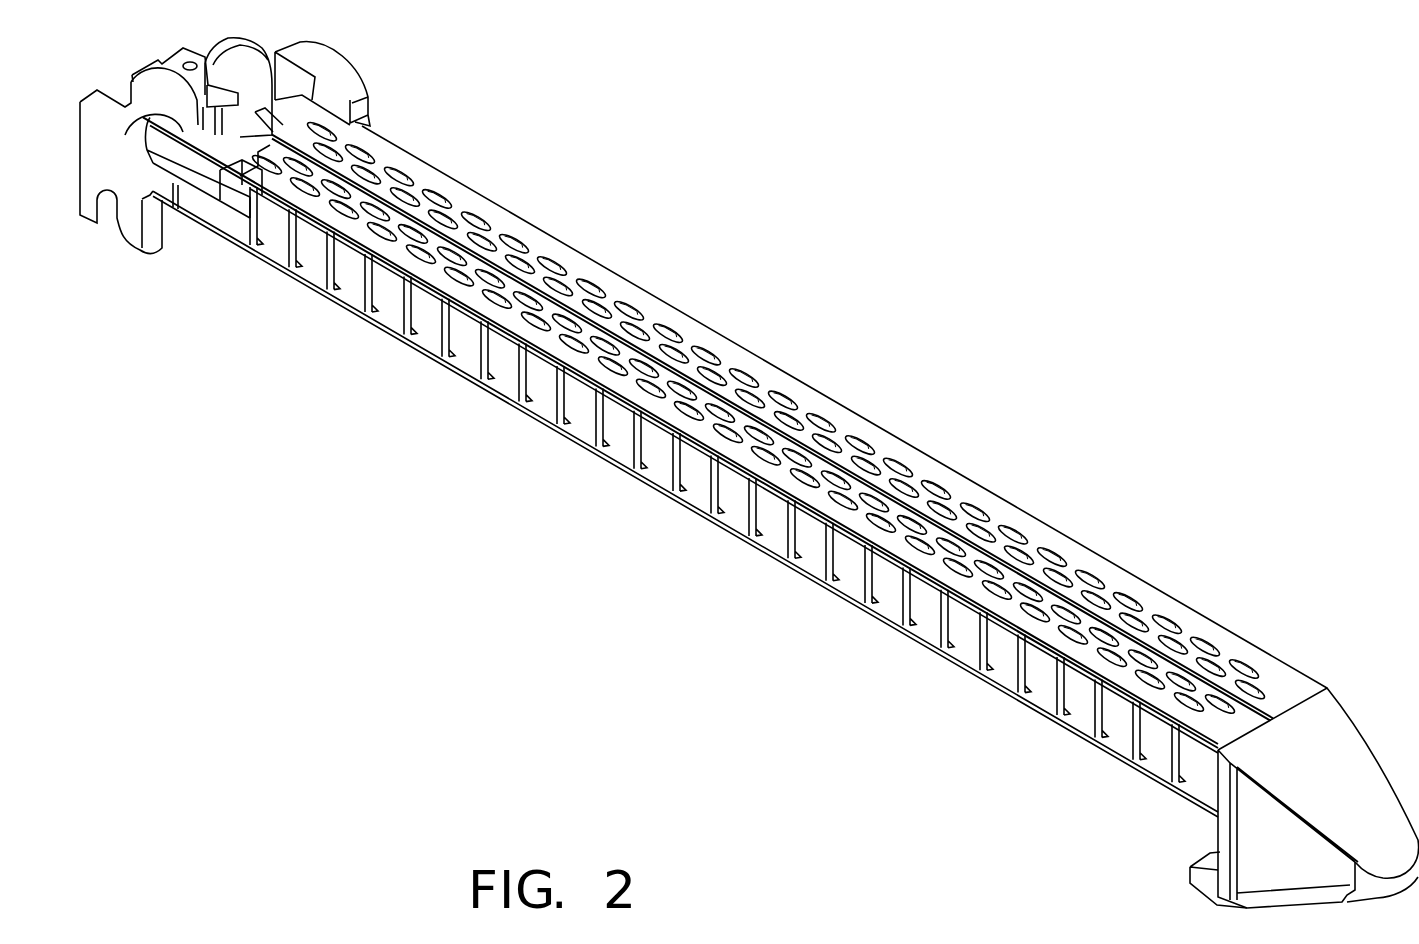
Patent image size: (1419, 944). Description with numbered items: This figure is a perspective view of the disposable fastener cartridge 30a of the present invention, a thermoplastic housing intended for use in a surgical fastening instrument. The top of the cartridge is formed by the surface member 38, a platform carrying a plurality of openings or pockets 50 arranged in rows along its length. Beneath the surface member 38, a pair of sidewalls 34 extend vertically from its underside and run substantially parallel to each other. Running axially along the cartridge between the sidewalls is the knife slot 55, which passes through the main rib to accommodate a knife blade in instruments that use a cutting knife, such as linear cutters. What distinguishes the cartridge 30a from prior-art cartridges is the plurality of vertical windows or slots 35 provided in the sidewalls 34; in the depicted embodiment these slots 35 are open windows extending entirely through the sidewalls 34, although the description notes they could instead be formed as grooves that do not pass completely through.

The disposable fastener cartridge 30a is at (710, 268).
The sidewall 34 is at (538, 392).
The slot 35 is at (712, 490).
The surface member 38 is at (847, 420).
The opening or pocket 50 is at (1163, 622).
The knife slot 55 is at (368, 192).